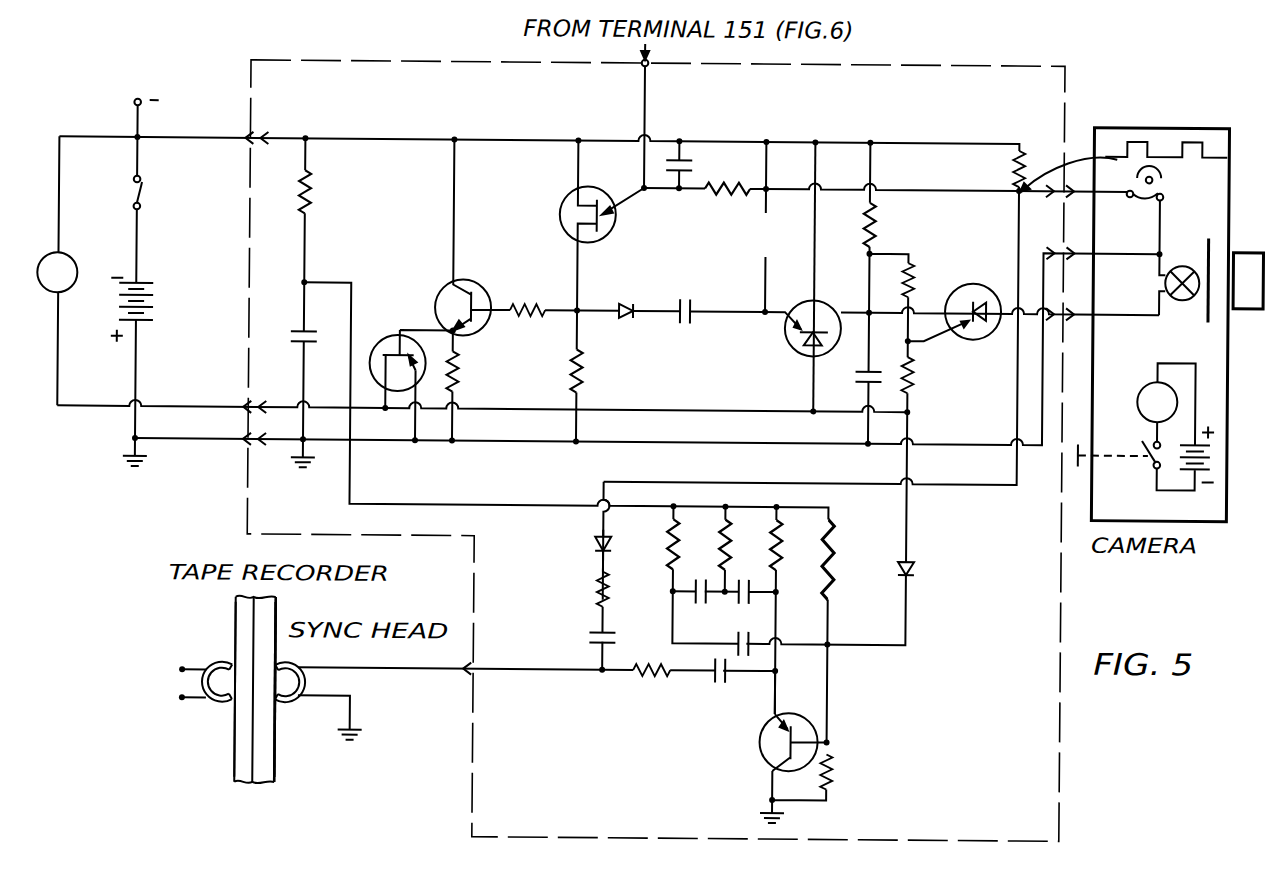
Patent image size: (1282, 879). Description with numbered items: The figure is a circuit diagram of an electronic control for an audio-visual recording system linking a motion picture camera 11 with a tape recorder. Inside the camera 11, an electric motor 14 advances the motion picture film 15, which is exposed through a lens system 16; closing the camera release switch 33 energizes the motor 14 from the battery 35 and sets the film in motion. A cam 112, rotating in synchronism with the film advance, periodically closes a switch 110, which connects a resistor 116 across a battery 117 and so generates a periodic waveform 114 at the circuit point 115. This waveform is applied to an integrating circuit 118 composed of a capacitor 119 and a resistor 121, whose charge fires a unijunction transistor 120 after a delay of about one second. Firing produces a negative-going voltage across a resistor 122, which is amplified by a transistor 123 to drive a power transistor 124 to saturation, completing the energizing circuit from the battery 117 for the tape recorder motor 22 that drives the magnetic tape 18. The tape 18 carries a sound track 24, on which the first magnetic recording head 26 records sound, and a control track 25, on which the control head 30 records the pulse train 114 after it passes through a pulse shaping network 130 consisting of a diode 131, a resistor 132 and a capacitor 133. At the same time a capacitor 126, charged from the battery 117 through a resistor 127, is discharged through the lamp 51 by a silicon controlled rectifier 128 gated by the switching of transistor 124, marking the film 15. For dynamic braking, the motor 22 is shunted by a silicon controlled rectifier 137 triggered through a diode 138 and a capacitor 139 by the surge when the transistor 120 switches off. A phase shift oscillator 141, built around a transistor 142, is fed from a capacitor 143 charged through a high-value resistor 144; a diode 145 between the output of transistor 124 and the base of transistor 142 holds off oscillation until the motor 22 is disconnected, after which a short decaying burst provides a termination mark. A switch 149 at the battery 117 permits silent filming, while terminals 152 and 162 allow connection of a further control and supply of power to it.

The motion picture camera 11 is at (1236, 410).
The electric motor 14 is at (1145, 388).
The motion picture film 15 is at (1213, 243).
The lens system 16 is at (1258, 285).
The magnetic recording tape 18 is at (255, 792).
The electric drive or motor 22 is at (56, 257).
The sound track 24 is at (240, 776).
The control track 25 is at (279, 763).
The first magnetic recording head 26 is at (226, 666).
The tape recorder control head 30 is at (295, 704).
The camera release switch 33 is at (1152, 470).
The battery 35 is at (1206, 466).
The lamp 51 is at (1198, 264).
The switch 110 is at (1152, 198).
The cam 112 is at (1160, 177).
The periodic waveform 114 is at (1163, 140).
The circuit point 115 is at (1016, 195).
The resistor 116 is at (1040, 126).
The battery 117 is at (143, 325).
The integrating circuit 118 is at (735, 157).
The capacitor 119 is at (680, 158).
The unijunction transistor 120 is at (572, 208).
The resistor 121 is at (700, 198).
The resistor 122 is at (574, 370).
The transistor 123 is at (450, 294).
The power transistor 124 is at (399, 338).
The capacitor 126 is at (860, 380).
The resistor 127 is at (872, 220).
The silicon controlled rectifier 128 is at (988, 333).
The pulse shaping network 130 is at (592, 573).
The diode 131 is at (596, 545).
The resistor 132 is at (596, 598).
The capacitor 133 is at (594, 636).
The silicon controlled rectifier 137 is at (806, 353).
The diode 138 is at (626, 320).
The capacitor 139 is at (677, 322).
The phase shift oscillator 141 is at (804, 560).
The transistor 142 is at (810, 721).
The capacitor 143 is at (303, 333).
The resistor 144 is at (310, 196).
The diode 145 is at (915, 566).
The switch 149 is at (131, 192).
The terminal 152 is at (639, 66).
The terminal 162 is at (132, 106).